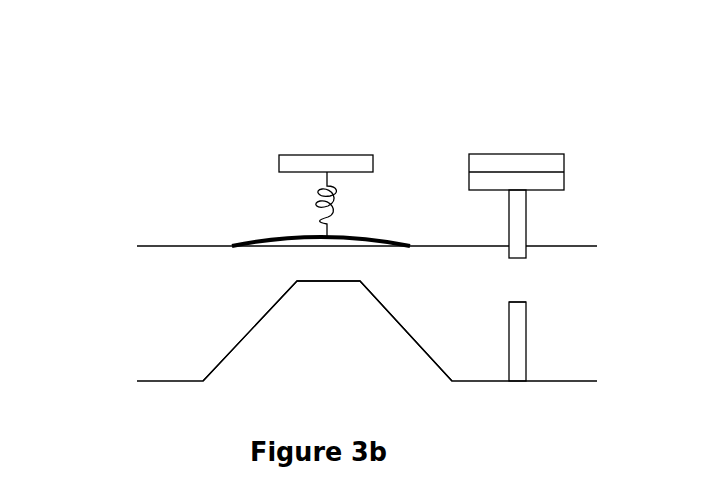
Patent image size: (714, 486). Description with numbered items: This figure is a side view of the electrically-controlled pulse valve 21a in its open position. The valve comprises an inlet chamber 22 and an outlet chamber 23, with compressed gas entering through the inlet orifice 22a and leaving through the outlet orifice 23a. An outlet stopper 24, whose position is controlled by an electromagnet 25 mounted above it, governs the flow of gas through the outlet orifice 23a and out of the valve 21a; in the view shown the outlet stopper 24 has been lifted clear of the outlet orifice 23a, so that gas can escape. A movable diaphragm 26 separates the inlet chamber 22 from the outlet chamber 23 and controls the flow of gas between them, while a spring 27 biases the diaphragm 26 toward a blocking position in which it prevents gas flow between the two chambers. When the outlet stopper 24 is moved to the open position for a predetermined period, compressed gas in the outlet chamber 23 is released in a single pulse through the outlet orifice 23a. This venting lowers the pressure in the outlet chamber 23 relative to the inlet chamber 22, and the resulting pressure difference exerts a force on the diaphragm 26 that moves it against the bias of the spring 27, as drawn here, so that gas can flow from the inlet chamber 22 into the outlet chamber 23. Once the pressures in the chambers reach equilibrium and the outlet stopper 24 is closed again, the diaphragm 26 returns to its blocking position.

The electrically-controlled pulse valve 21a is at (180, 180).
The inlet chamber 22 is at (200, 326).
The inlet orifice 22a is at (142, 360).
The outlet chamber 23 is at (482, 323).
The outlet orifice 23a is at (527, 284).
The outlet stopper 24 is at (527, 225).
The electromagnet 25 is at (565, 162).
The movable diaphragm 26 is at (255, 238).
The spring 27 is at (338, 205).